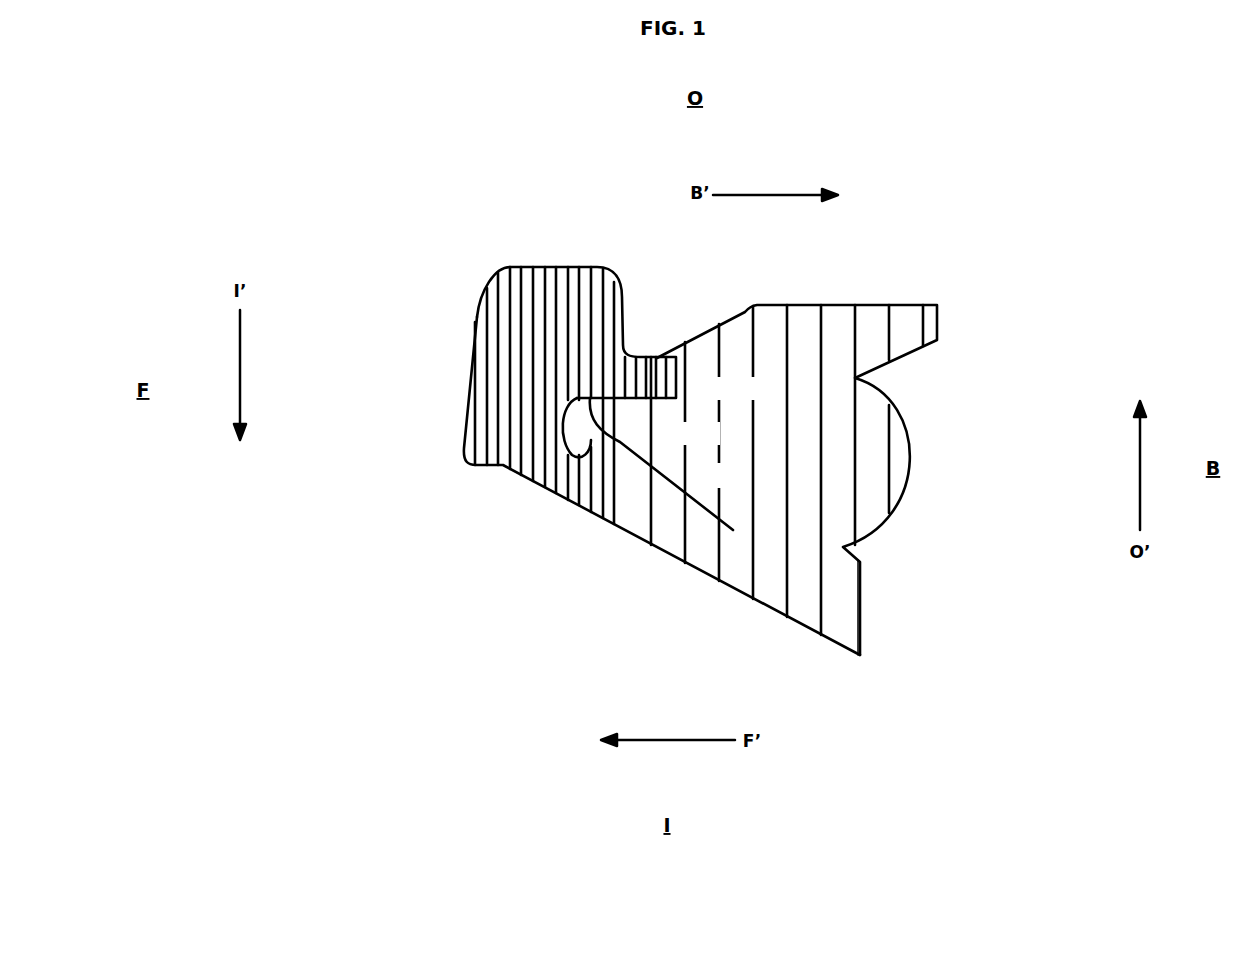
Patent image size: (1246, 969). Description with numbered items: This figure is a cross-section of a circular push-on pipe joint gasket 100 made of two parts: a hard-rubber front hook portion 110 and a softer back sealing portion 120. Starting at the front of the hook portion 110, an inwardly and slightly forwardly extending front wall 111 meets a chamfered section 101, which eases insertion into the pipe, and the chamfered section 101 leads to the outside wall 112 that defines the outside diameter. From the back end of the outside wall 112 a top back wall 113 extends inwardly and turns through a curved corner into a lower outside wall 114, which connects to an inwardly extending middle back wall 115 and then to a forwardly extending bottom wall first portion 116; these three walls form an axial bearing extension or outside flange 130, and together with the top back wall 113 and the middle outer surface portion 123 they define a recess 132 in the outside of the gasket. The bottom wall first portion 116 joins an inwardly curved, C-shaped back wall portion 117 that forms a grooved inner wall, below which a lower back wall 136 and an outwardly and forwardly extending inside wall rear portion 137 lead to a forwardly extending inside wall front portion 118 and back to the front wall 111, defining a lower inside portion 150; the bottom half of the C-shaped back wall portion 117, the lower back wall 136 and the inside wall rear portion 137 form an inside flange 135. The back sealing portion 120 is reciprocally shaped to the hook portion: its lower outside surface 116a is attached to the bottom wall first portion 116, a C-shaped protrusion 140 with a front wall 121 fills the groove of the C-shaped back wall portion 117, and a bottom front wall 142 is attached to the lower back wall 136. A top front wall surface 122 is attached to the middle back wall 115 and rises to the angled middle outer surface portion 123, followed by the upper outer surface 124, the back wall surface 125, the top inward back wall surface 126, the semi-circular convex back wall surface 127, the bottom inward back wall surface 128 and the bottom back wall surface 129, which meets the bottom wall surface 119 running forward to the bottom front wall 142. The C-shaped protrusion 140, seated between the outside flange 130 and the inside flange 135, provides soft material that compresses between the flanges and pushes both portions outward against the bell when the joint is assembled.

The gasket 100 is at (391, 196).
The chamfered section 101 is at (537, 362).
The front hook portion 110 is at (513, 333).
The front wall 111 is at (467, 393).
The outside wall 112 is at (540, 290).
The top back wall 113 is at (623, 297).
The lower outside wall 114 is at (648, 358).
The middle back wall 115 is at (640, 400).
The bottom wall first portion 116 is at (615, 393).
The lower outside surface 116a is at (598, 433).
The C-shaped back wall portion 117 is at (562, 412).
The inside wall front portion 118 is at (478, 467).
The bottom wall surface 119 is at (823, 637).
The back sealing portion 120 is at (760, 465).
The front wall 121 is at (572, 402).
The top front wall surface 122 is at (673, 372).
The middle outer surface portion 123 is at (742, 320).
The upper outer surface 124 is at (855, 305).
The back wall surface 125 is at (937, 323).
The top inward back wall surface 126 is at (883, 367).
The convex back wall surface 127 is at (913, 445).
The bottom inward back wall surface 128 is at (852, 555).
The bottom back wall surface 129 is at (862, 627).
The outside flange 130 is at (657, 357).
The recess 132 is at (642, 355).
The inside flange 135 is at (580, 500).
The lower back wall 136 is at (583, 503).
The inside wall rear portion 137 is at (537, 485).
The C-shaped protrusion 140 is at (733, 530).
The bottom front wall 142 is at (583, 440).
The lower inside portion 150 is at (478, 455).